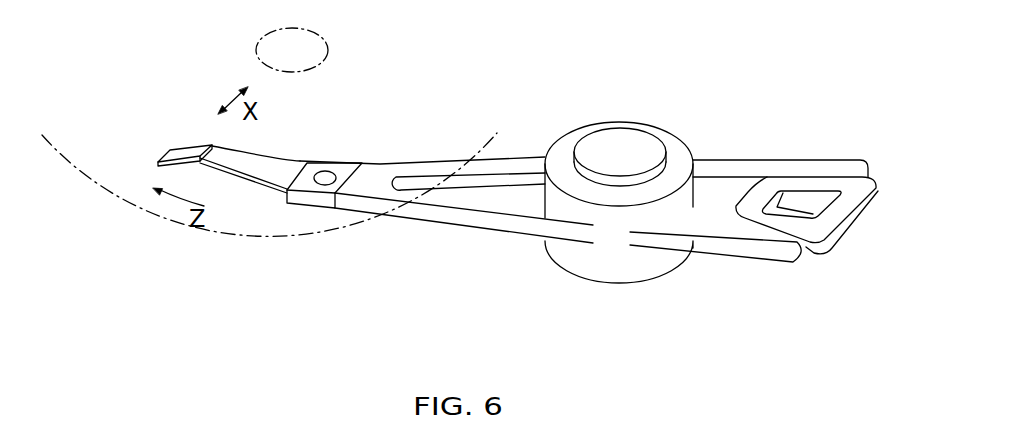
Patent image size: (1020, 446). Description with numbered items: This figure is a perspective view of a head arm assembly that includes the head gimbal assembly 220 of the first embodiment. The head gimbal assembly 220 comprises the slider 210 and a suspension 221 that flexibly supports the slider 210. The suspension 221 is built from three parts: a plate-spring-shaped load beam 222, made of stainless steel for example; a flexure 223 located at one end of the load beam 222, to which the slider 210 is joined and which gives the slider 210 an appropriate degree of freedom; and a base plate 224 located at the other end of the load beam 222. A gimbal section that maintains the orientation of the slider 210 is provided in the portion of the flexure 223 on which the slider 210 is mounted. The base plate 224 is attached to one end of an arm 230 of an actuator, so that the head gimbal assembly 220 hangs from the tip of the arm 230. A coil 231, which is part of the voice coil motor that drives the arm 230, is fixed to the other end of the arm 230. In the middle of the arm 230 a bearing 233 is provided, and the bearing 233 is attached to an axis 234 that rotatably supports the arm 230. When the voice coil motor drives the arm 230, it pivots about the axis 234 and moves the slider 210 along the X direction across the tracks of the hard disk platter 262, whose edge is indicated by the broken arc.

The slider 210 is at (192, 154).
The head gimbal assembly 220 is at (279, 216).
The suspension 221 is at (280, 149).
The load beam 222 is at (293, 167).
The flexure 223 is at (163, 158).
The base plate 224 is at (355, 162).
The arm 230 is at (428, 213).
The coil 231 is at (848, 225).
The bearing 233 is at (567, 140).
The axis 234 is at (630, 142).
The hard disk platter 262 is at (202, 232).